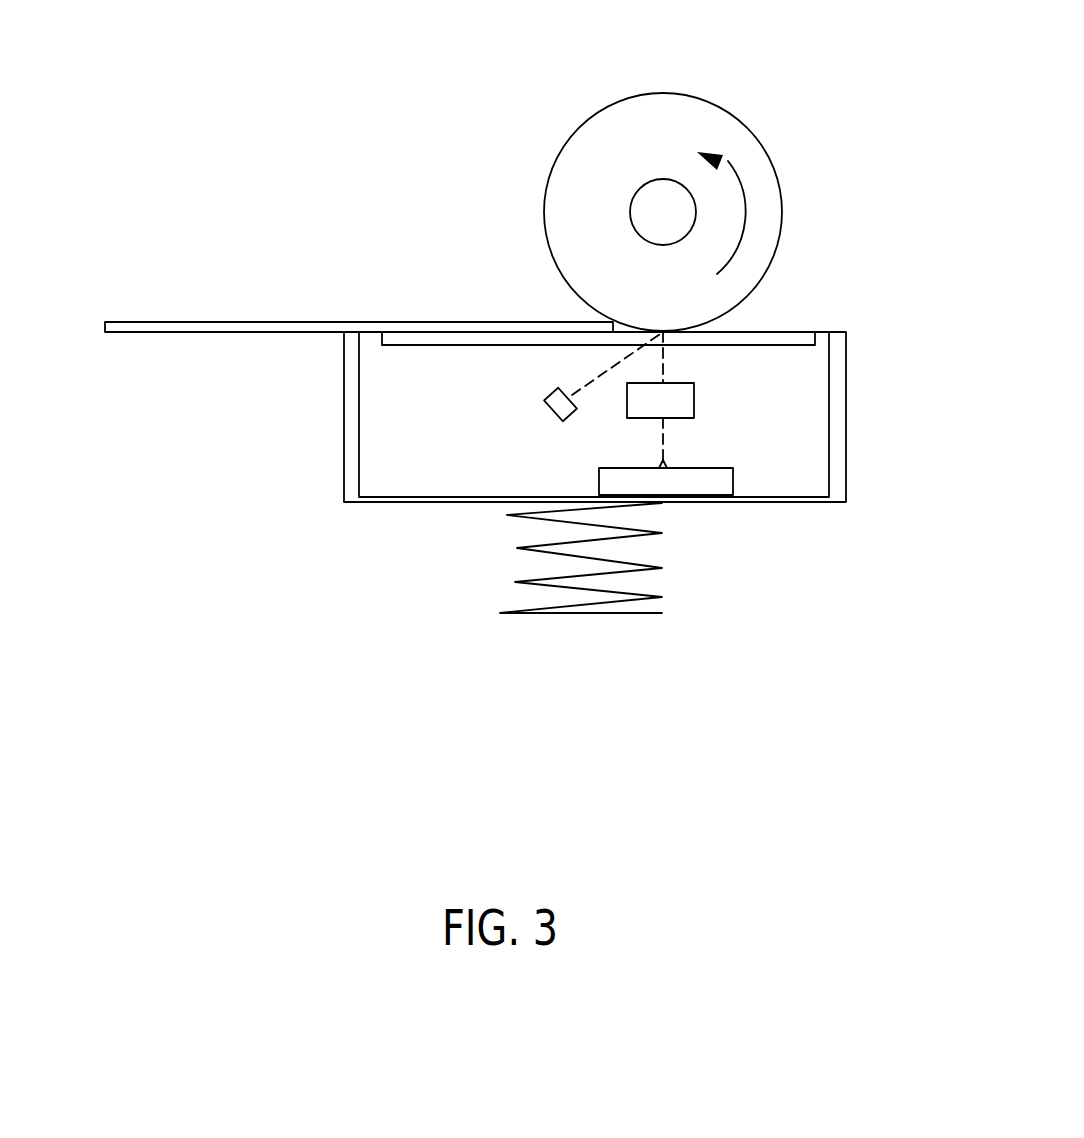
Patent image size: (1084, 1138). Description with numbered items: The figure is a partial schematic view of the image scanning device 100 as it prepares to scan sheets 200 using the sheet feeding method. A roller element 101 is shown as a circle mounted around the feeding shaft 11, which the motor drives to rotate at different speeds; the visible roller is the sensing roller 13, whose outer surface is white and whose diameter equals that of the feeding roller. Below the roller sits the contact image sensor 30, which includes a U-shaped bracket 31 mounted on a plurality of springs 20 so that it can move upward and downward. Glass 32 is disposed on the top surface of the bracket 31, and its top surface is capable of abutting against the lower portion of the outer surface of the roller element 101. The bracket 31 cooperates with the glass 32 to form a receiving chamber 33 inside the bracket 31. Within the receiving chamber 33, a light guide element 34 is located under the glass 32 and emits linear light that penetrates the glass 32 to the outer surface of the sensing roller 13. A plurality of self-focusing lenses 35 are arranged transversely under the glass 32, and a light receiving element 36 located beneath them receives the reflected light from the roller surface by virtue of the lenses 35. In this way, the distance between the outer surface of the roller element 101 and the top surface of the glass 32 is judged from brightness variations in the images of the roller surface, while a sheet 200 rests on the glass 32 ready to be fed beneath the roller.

The image scanning device 100 is at (400, 263).
The roller element 101 is at (768, 92).
The feeding shaft 11 is at (665, 222).
The sensing roller 13 is at (770, 217).
The sheets 200 is at (226, 327).
The springs 20 is at (623, 615).
The contact image sensor 30 is at (372, 532).
The bracket 31 is at (353, 457).
The glass 32 is at (468, 338).
The receiving chamber 33 is at (388, 403).
The light guide element 34 is at (547, 403).
The self-focusing lenses 35 is at (678, 403).
The light receiving element 36 is at (707, 485).